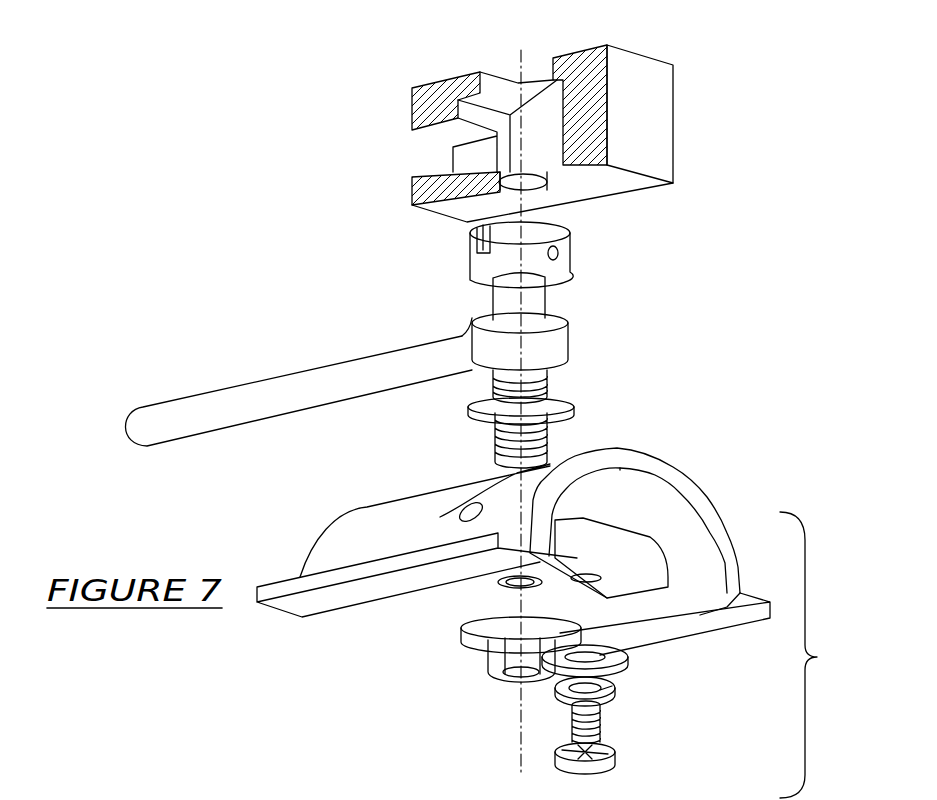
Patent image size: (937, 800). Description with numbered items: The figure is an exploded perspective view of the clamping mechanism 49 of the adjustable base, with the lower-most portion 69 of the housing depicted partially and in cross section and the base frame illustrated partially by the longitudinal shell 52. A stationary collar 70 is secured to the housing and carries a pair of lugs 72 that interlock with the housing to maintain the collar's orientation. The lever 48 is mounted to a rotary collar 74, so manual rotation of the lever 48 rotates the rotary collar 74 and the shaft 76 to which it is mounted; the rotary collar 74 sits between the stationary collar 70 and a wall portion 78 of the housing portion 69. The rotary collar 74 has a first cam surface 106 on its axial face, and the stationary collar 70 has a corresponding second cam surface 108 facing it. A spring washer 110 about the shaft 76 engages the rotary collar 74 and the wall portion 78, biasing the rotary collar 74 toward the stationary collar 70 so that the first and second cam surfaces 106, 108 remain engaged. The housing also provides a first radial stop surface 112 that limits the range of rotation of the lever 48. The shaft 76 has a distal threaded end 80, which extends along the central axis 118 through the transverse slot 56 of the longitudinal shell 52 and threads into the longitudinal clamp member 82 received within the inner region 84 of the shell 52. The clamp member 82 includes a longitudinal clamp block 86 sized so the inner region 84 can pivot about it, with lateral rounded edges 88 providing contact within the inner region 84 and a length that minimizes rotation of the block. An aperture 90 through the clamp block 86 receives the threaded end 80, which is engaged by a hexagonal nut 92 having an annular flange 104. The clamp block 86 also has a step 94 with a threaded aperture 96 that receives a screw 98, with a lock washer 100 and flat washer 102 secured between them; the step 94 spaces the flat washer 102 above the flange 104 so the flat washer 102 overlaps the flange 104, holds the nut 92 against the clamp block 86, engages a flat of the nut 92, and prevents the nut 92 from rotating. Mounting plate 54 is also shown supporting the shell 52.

The lever 48 is at (152, 407).
The clamping mechanism 49 is at (340, 92).
The longitudinal shell 52 is at (663, 475).
The mounting plate lug 54 is at (367, 538).
The transverse slot 56 is at (473, 500).
The lower-most portion of the housing 69 is at (620, 148).
The stationary collar 70 is at (535, 240).
The lugs 72 is at (475, 236).
The rotary collar 74 is at (548, 333).
The shaft 76 is at (525, 388).
The wall portion 78 is at (548, 173).
The distal threaded end 80 is at (492, 448).
The longitudinal clamp member 82 is at (817, 657).
The inner region 84 is at (673, 506).
The longitudinal clamp block 86 is at (637, 558).
The lateral rounded edges 88 is at (665, 547).
The aperture 90 is at (427, 593).
The hexagonal nut 92 is at (605, 625).
The step 94 is at (727, 607).
The threaded aperture 96 is at (467, 607).
The screw 98 is at (615, 757).
The lock washer 100 is at (615, 693).
The flat washer 102 is at (630, 660).
The annular flange 104 is at (476, 640).
The first cam surface 106 is at (468, 319).
The second cam surface 108 is at (478, 285).
The spring washer 110 is at (570, 408).
The first radial stop surface 112 is at (467, 158).
The central axis 118 is at (520, 725).